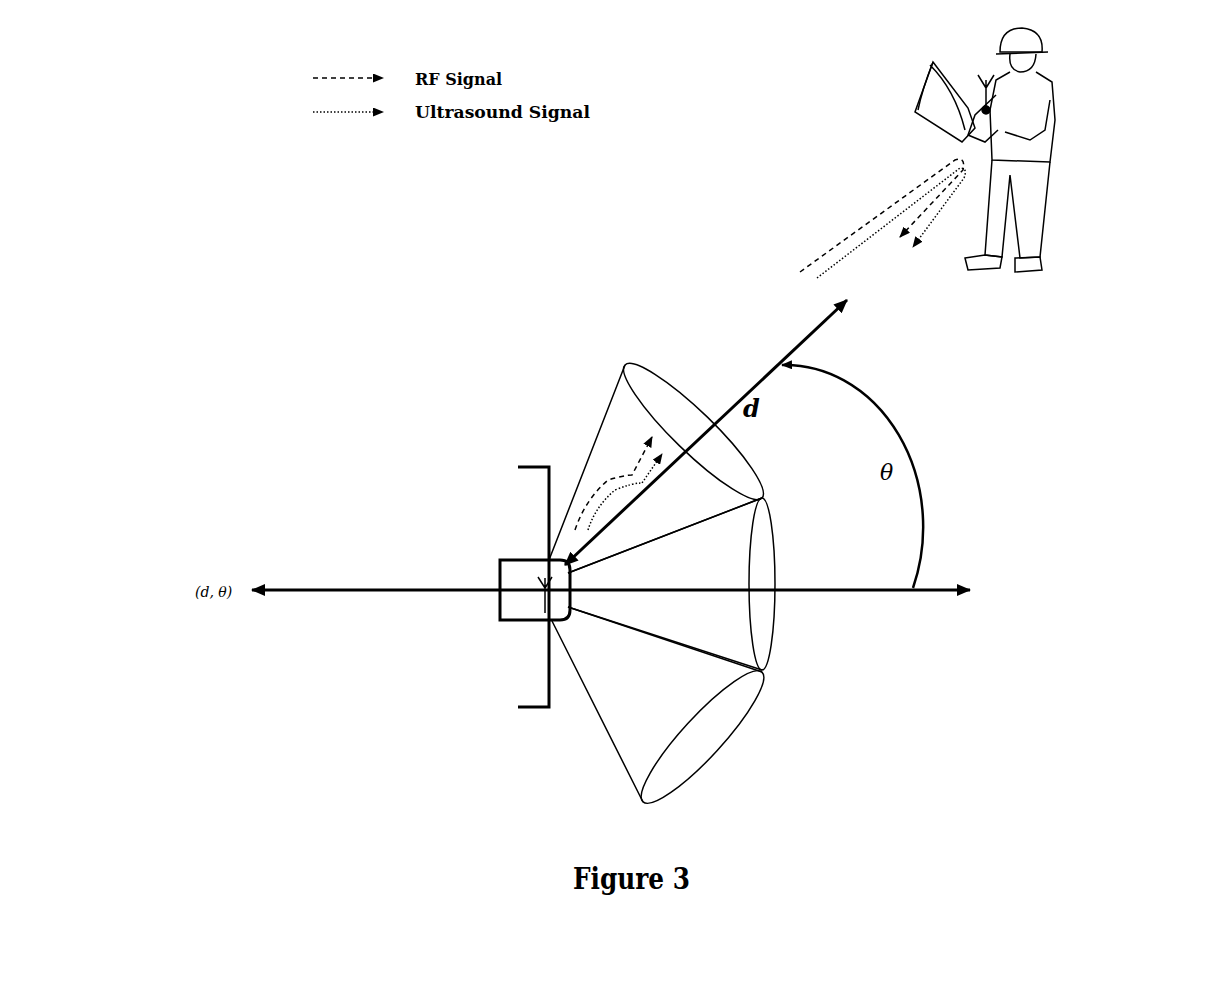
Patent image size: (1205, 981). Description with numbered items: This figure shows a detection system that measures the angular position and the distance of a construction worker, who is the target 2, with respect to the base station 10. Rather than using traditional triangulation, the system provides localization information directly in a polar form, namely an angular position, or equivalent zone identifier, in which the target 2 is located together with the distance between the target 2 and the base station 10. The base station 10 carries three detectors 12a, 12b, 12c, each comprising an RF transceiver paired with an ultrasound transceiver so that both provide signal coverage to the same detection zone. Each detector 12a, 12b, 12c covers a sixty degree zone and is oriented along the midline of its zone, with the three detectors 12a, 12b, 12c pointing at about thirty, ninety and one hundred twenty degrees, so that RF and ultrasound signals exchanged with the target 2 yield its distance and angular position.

The target 2 is at (1052, 85).
The base station 10 is at (525, 568).
The first detector 12a is at (717, 713).
The second detector 12b is at (761, 601).
The third detector 12c is at (663, 393).